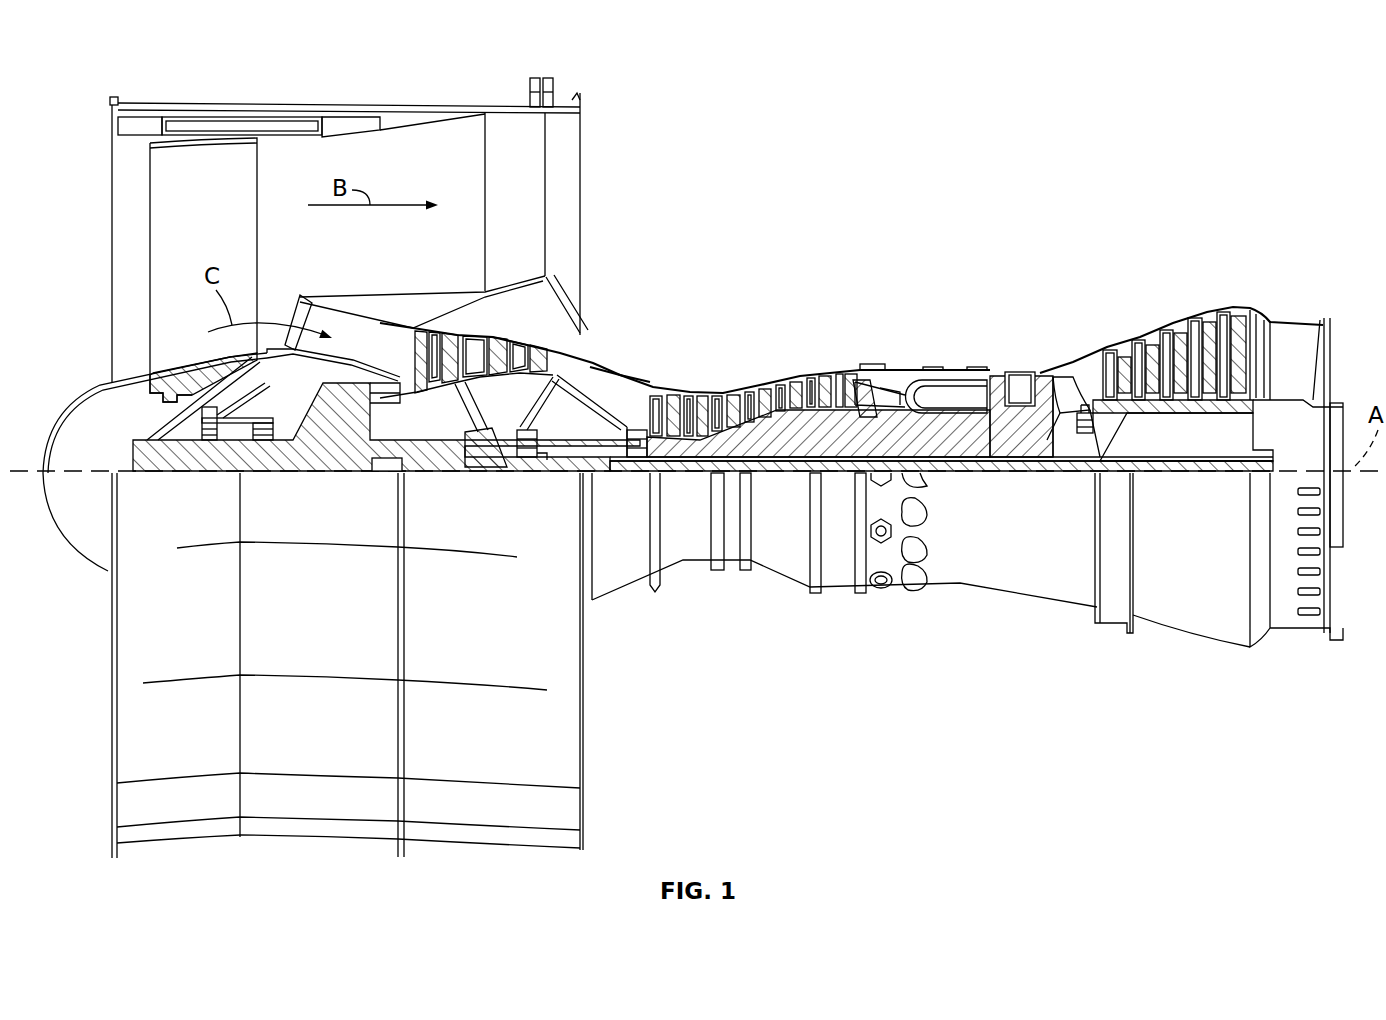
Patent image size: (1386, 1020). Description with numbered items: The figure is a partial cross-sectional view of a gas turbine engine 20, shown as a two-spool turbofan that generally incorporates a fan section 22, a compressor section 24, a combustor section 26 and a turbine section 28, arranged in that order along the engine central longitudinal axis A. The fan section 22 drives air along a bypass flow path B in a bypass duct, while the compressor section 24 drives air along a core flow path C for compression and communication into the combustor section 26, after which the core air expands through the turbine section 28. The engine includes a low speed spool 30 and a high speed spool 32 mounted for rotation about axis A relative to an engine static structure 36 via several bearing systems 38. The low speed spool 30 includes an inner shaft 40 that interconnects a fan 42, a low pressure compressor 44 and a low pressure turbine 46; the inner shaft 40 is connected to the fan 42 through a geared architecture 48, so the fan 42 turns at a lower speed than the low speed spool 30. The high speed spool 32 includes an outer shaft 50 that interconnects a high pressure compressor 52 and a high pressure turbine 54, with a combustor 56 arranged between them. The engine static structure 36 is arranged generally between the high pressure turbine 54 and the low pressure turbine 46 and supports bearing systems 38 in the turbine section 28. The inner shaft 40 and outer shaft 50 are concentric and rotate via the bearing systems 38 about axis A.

The gas turbine engine 20 is at (1217, 73).
The fan section 22 is at (197, 100).
The compressor section 24 is at (642, 304).
The combustor section 26 is at (884, 304).
The turbine section 28 is at (1138, 310).
The low speed spool 30 is at (798, 484).
The high speed spool 32 is at (860, 427).
The engine static structure 36 is at (836, 596).
The bearing systems 38 is at (200, 462).
The inner shaft 40 is at (598, 474).
The fan 42 is at (208, 205).
The low pressure compressor 44 is at (497, 352).
The low pressure turbine 46 is at (1175, 330).
The geared architecture 48 is at (336, 462).
The outer shaft 50 is at (978, 470).
The high pressure compressor 52 is at (760, 443).
The high pressure turbine 54 is at (1018, 371).
The combustor 56 is at (937, 397).